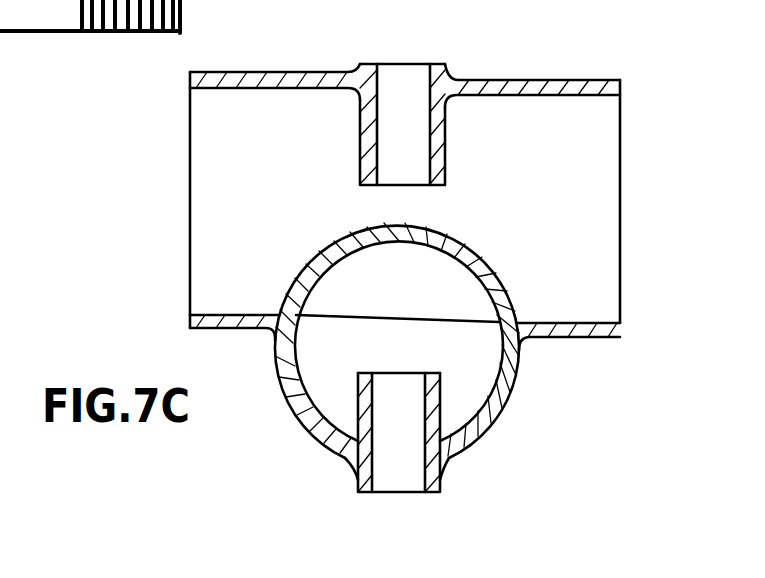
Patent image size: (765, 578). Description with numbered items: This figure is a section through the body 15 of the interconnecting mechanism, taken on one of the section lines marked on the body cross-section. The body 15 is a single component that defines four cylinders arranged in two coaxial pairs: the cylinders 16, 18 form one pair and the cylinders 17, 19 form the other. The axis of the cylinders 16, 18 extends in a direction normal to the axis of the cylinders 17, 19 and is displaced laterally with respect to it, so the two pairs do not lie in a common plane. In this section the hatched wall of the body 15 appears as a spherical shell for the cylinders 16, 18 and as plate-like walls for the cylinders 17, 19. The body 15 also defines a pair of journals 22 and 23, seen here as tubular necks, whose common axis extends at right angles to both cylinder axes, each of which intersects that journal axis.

The body 15 is at (160, 337).
The cylinder 16 is at (446, 340).
The cylinder 17 is at (270, 88).
The cylinder 18 is at (510, 392).
The cylinder 19 is at (527, 95).
The journal 22 is at (357, 405).
The journal 23 is at (450, 120).